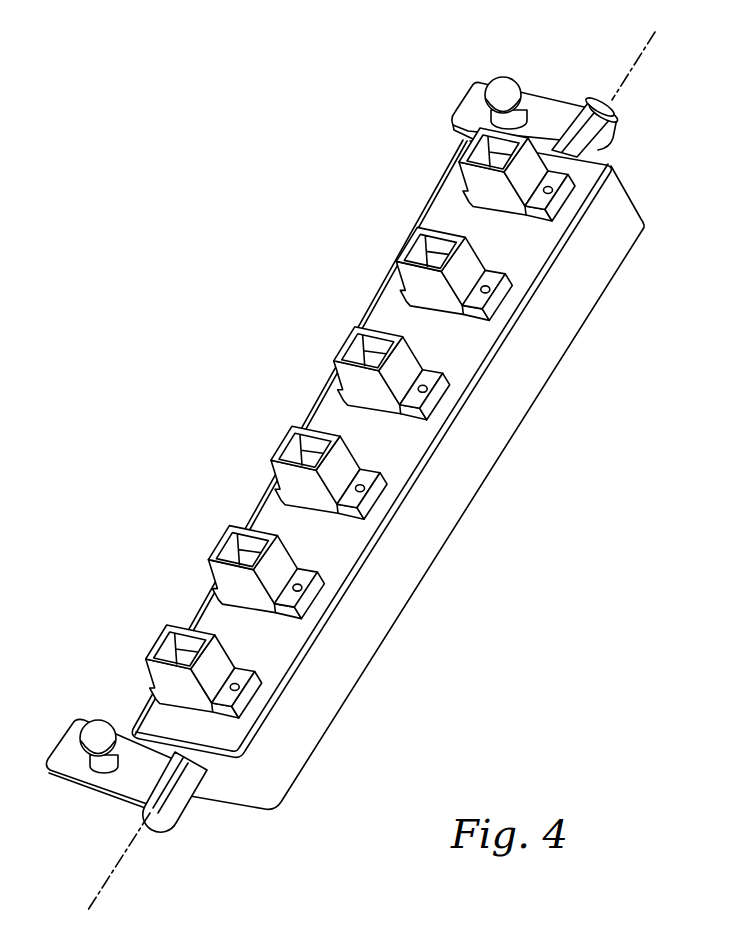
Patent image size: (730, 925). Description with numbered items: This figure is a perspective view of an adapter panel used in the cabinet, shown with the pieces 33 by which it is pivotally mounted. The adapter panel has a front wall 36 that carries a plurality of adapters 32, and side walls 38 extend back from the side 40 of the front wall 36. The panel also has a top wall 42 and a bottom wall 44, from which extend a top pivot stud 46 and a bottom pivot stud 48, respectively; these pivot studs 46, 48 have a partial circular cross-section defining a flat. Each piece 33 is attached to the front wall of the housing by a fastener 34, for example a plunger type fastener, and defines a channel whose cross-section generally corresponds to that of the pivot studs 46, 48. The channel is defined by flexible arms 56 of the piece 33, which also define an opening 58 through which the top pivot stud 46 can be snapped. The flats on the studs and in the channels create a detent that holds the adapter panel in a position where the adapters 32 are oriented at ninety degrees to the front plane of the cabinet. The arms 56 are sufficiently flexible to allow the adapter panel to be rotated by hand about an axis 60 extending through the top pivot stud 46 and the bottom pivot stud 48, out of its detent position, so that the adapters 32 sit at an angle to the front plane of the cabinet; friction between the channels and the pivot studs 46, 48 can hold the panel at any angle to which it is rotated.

The adapters 32 is at (413, 237).
The pieces 33 is at (552, 115).
The fastener 34 is at (500, 93).
The front wall 36 is at (412, 325).
The side walls 38 is at (430, 547).
The side 40 is at (403, 473).
The top wall 42 is at (627, 187).
The bottom wall 44 is at (233, 777).
The top pivot stud 46 is at (612, 100).
The bottom pivot stud 48 is at (176, 780).
The flexible arms 56 is at (605, 147).
The opening 58 is at (570, 120).
The axis 60 is at (127, 862).